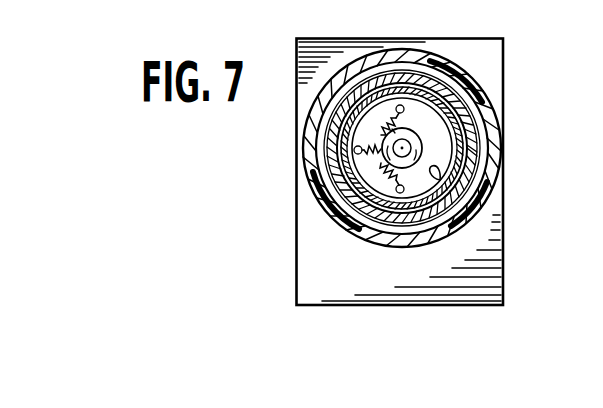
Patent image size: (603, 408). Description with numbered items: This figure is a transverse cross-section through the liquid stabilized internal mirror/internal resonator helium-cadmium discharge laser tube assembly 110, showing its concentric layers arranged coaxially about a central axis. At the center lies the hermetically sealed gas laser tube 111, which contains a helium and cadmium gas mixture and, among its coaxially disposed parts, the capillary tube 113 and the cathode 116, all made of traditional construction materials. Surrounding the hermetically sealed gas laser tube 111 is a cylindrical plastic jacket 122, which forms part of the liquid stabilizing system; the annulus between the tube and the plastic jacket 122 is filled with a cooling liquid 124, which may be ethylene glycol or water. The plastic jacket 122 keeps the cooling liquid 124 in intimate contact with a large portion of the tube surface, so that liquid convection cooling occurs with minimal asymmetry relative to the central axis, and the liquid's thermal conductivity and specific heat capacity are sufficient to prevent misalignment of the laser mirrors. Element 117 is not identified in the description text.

The liquid stabilized internal mirror/internal resonator helium-cadmium discharge la 110 is at (518, 159).
The hermetically sealed gas laser tube 111 is at (342, 233).
The capillary tube 113 is at (411, 140).
The cathode 116 is at (373, 122).
The retainer 117 is at (433, 175).
The cylindrical plastic jacket 122 is at (444, 232).
The cooling liquid 124 is at (340, 172).